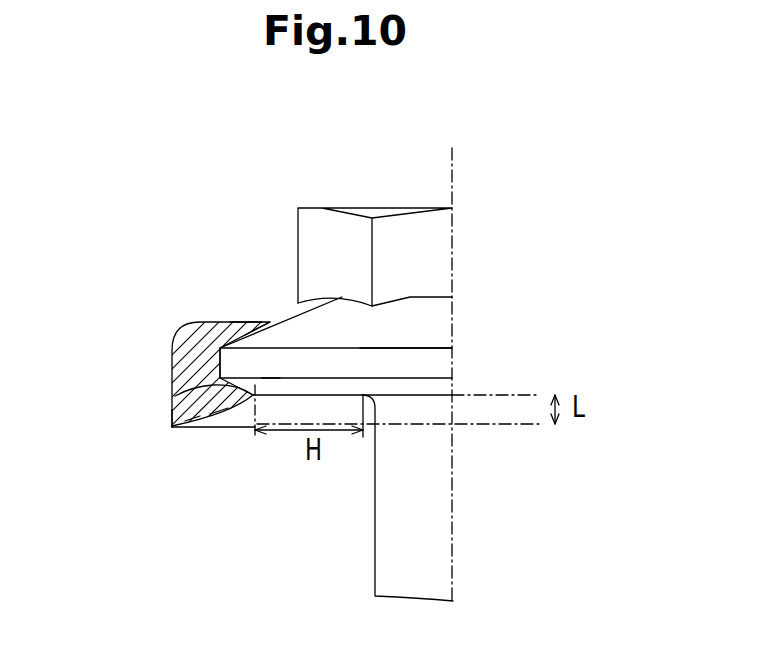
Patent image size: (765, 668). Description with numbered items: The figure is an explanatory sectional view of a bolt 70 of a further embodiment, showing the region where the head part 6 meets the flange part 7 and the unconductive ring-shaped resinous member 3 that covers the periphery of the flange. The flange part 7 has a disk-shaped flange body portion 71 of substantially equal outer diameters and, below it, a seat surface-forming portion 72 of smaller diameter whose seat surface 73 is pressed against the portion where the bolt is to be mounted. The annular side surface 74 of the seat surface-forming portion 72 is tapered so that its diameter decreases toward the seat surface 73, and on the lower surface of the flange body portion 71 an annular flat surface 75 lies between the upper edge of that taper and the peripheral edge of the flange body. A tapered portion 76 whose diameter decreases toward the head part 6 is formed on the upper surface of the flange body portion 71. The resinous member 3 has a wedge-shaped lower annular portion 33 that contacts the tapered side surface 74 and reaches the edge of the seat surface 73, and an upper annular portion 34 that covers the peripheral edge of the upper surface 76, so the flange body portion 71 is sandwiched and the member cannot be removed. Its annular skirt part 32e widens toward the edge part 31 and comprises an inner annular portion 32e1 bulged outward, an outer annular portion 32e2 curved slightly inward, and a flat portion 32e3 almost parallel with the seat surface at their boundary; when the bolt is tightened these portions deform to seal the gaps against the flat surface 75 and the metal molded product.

The ring-shaped resinous member 3 is at (191, 343).
The head part 6 is at (413, 246).
The flange part 7 is at (449, 352).
The edge part 31 is at (173, 430).
The annular skirt part 32e is at (172, 427).
The inner annular portion 32e1 is at (250, 433).
The outer annular portion 32e2 is at (193, 430).
The flat portion 32e3 is at (218, 428).
The lower annular portion 33 is at (182, 390).
The upper annular portion 34 is at (246, 321).
The bolt 70 is at (484, 211).
The flange body portion 71 is at (377, 367).
The seat surface-forming portion 72 is at (430, 385).
The seat surface 73 is at (315, 399).
The annular side surface 74 is at (270, 380).
The annular flat surface 75 is at (281, 347).
The tapered portion 76 is at (262, 322).